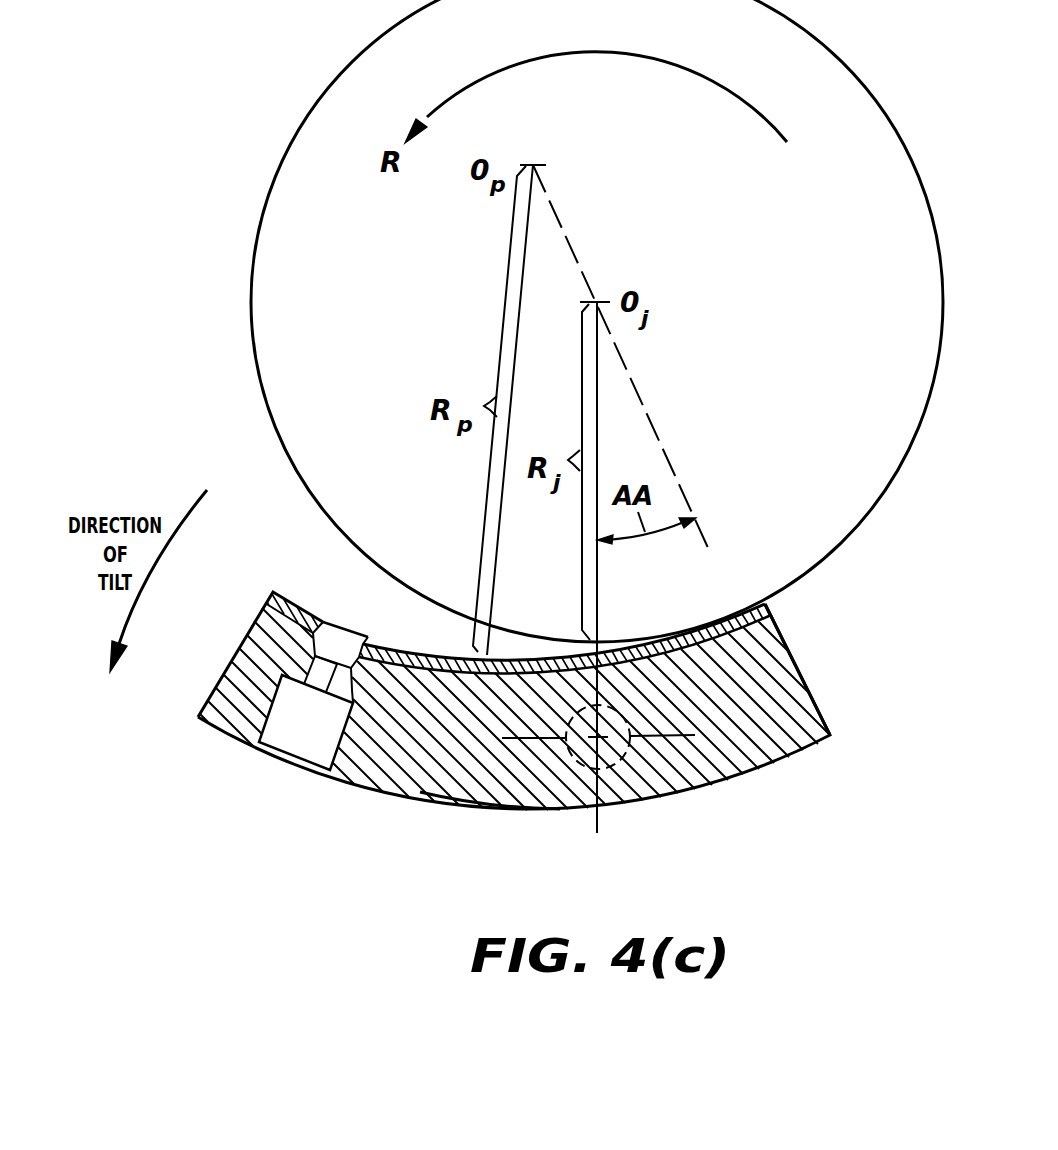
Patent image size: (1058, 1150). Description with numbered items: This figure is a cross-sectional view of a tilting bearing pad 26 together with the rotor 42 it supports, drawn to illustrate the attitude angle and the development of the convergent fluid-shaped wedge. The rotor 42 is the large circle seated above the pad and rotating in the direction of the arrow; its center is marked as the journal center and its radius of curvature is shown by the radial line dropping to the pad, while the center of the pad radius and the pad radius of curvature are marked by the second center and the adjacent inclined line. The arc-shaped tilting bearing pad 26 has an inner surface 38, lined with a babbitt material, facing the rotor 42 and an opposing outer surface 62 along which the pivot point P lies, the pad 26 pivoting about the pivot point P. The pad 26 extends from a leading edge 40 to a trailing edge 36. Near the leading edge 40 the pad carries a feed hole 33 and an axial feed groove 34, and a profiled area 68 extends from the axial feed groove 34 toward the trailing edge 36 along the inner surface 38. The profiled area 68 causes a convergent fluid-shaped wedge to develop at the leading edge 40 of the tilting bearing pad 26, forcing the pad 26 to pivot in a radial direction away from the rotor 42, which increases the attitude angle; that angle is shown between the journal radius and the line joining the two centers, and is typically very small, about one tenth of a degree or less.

The tilting bearing pad 26 is at (810, 690).
The feed hole 33 is at (320, 677).
The axial feed groove 34 is at (340, 628).
The trailing edge 36 is at (792, 650).
The inner surface 38 is at (455, 652).
The leading edge 40 is at (236, 643).
The rotor 42 is at (831, 362).
The outer surface 62 is at (490, 803).
The profiled area 68 is at (377, 640).
The pivot point P is at (598, 805).